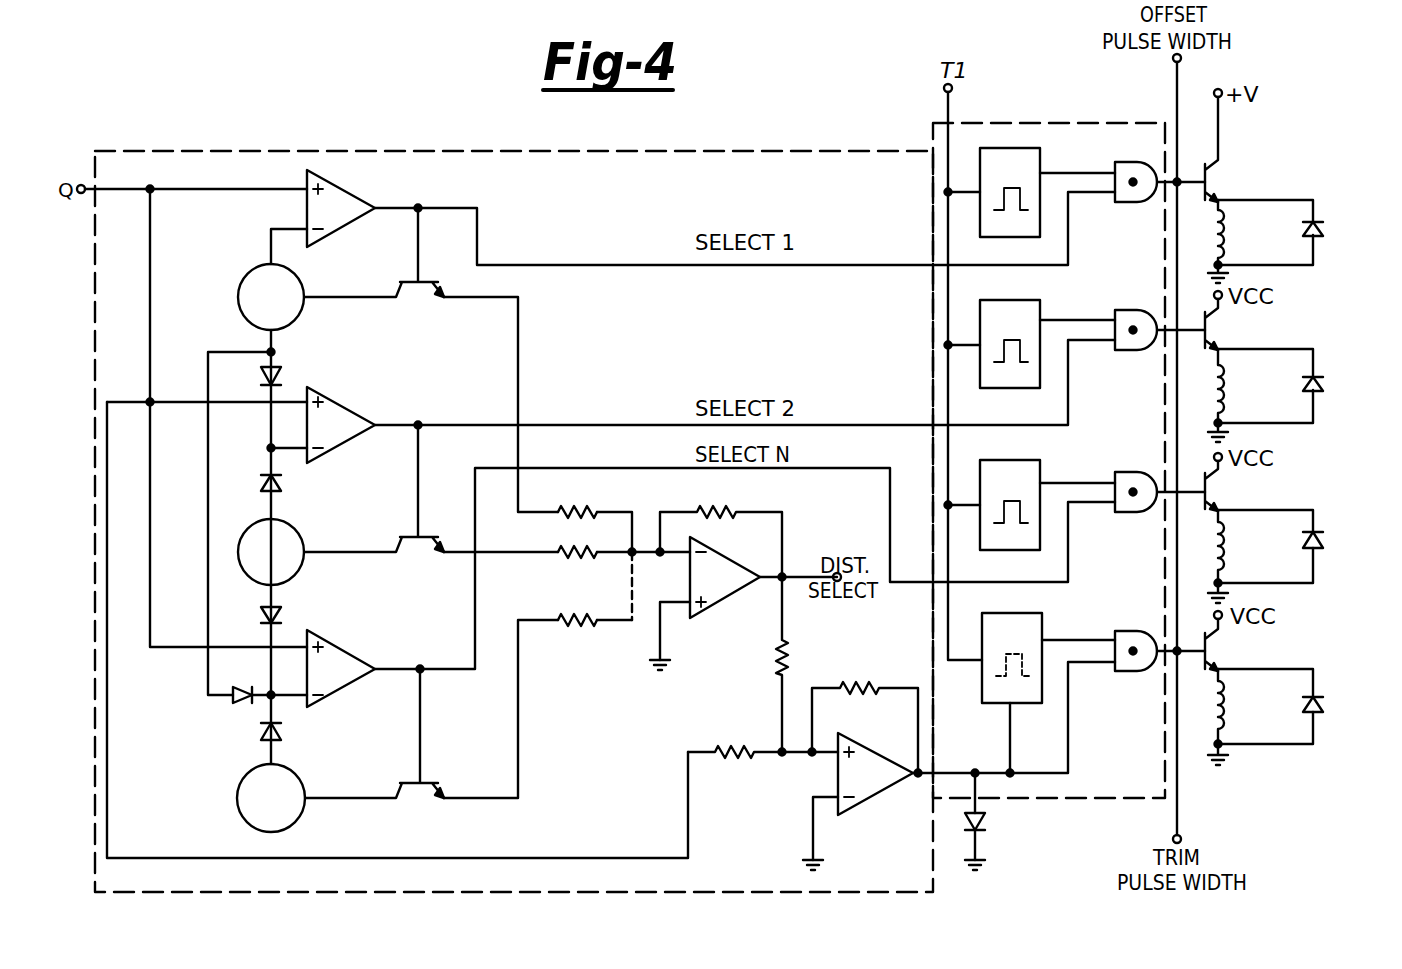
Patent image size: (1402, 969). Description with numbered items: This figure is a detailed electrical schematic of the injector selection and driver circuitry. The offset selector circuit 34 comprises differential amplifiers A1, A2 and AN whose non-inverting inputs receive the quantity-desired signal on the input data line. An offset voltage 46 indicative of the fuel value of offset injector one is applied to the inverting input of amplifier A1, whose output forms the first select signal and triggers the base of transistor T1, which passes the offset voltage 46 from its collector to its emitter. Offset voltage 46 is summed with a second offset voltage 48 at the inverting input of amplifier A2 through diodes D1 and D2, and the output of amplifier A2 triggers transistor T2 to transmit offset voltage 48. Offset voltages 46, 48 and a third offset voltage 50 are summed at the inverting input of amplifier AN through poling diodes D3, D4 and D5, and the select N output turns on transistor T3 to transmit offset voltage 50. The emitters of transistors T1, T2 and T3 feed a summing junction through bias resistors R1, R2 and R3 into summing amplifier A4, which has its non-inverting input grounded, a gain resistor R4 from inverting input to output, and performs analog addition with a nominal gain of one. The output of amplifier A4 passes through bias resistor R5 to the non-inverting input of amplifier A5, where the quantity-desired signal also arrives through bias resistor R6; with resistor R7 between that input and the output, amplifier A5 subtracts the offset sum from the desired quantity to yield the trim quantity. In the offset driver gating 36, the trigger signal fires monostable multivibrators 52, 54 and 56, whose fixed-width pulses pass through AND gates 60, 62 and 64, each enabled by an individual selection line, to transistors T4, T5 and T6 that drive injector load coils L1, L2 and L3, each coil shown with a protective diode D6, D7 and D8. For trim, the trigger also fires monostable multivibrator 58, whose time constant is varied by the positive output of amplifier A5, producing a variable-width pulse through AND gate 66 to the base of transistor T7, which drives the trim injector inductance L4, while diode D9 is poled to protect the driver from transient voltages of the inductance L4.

The offset selector circuit 34 is at (509, 893).
The offset driver gating 36 is at (1066, 105).
The offset voltage 46 is at (300, 282).
The offset voltage 48 is at (302, 538).
The offset voltage 50 is at (300, 816).
The monostable multivibrator 52 is at (1040, 160).
The monostable multivibrator 54 is at (1018, 388).
The monostable multivibrator 56 is at (1018, 550).
The monostable multivibrator 58 is at (1000, 703).
The AND gate 60 is at (1140, 202).
The AND gate 62 is at (1144, 292).
The AND gate 64 is at (1144, 454).
The AND gate 66 is at (1144, 613).
The differential amplifier A1 is at (352, 190).
The differential amplifier A2 is at (352, 406).
The differential amplifier AN is at (352, 640).
The summing amplifier A4 is at (708, 608).
The summing amplifier A5 is at (858, 805).
The transistor T1 is at (406, 300).
The transistor T2 is at (406, 555).
The transistor T3 is at (434, 780).
The transistor T4 is at (1212, 172).
The transistor T5 is at (1212, 320).
The transistor T6 is at (1212, 482).
The transistor T7 is at (1212, 643).
The diode D1 is at (283, 378).
The diode D2 is at (283, 485).
The poling diode D3 is at (283, 612).
The poling diode D4 is at (240, 704).
The poling diode D5 is at (283, 732).
The diode D6 is at (1318, 228).
The diode D7 is at (1318, 383).
The diode D8 is at (1318, 538).
The diode D9 is at (1318, 704).
The injector load coil L1 is at (1226, 232).
The injector load coil L2 is at (1226, 390).
The injector load coil L3 is at (1226, 548).
The inductance L4 is at (1226, 705).
The bias resistor R1 is at (602, 498).
The bias resistor R2 is at (570, 560).
The bias resistor R3 is at (570, 628).
The gain resistor R4 is at (728, 506).
The bias resistor R5 is at (776, 668).
The bias resistor R6 is at (750, 734).
The resistor R7 is at (862, 682).